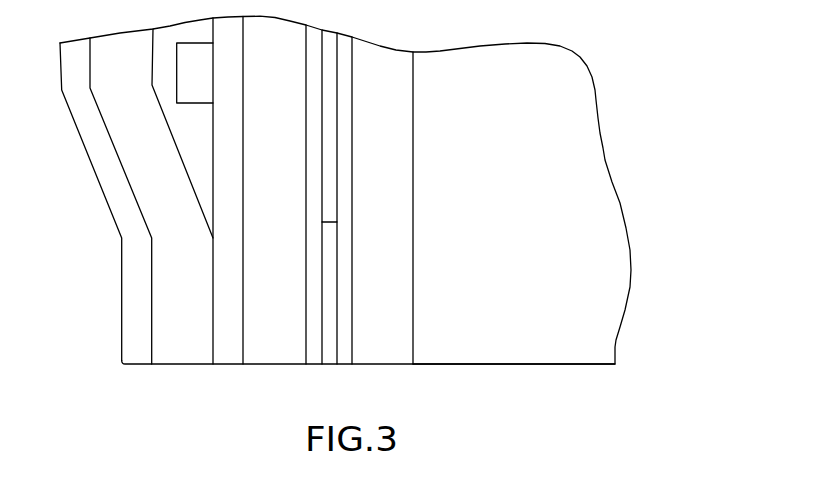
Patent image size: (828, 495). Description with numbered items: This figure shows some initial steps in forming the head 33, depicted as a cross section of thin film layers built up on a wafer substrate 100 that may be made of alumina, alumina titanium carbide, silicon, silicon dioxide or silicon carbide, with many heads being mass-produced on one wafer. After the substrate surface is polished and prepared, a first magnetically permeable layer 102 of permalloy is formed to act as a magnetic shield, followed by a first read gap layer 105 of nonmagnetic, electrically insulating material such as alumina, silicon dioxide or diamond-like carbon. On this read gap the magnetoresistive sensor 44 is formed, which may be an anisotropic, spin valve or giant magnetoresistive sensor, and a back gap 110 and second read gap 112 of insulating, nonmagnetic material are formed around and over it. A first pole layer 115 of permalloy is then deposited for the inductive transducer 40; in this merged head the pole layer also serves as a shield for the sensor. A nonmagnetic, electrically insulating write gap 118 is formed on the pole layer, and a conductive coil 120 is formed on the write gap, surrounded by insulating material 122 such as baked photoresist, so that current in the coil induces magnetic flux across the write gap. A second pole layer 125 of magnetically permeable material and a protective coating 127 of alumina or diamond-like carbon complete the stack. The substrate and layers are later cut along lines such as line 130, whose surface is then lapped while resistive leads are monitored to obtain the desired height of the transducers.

The head 33 is at (631, 48).
The inductive transducer 40 is at (222, 377).
The magnetoresistive sensor 44 is at (330, 357).
The wafer substrate 100 is at (545, 224).
The first magnetically permeable layer 102 is at (400, 150).
The first read gap layer 105 is at (348, 243).
The back gap 110 is at (328, 180).
The second read gap 112 is at (308, 238).
The first pole layer 115 is at (293, 130).
The write gap 118 is at (235, 303).
The conductive coil 120 is at (183, 72).
The nonmagnetic, electrically insulating material 122 is at (178, 133).
The second pole layer 125 is at (200, 266).
The protective coating 127 is at (130, 293).
The cutting line 130 is at (522, 365).